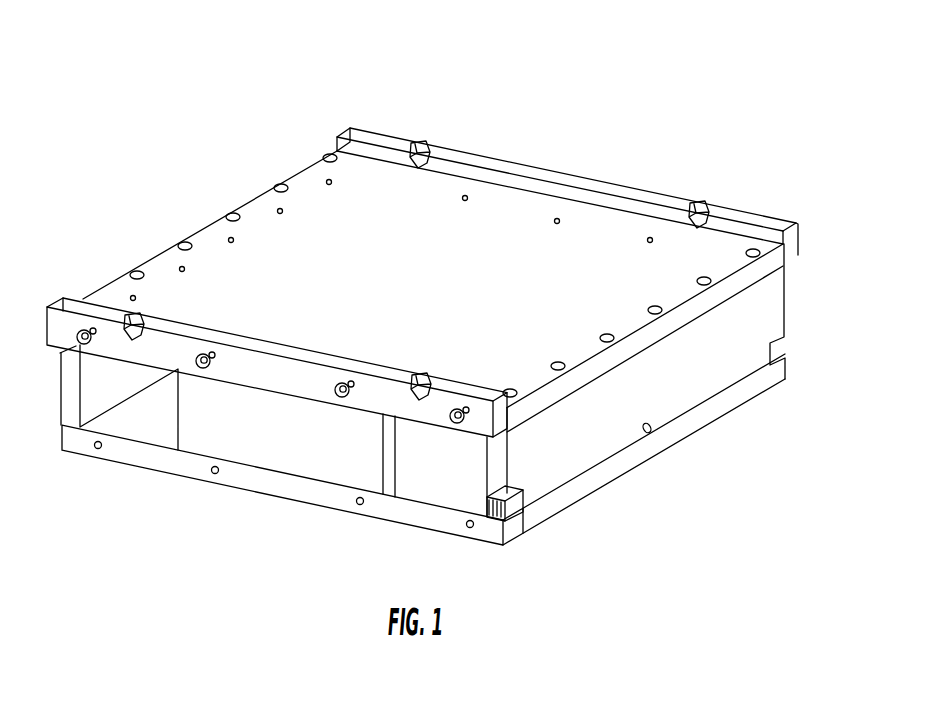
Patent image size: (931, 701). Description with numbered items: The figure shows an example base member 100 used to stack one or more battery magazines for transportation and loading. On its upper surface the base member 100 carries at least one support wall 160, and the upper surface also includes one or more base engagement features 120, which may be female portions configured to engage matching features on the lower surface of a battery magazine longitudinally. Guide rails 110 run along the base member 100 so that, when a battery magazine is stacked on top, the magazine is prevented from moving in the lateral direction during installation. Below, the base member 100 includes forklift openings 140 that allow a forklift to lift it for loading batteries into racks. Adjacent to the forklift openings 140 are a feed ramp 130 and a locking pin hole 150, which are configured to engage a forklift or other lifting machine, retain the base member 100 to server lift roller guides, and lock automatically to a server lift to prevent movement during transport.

The base member 100 is at (747, 84).
The guide rails 110 is at (475, 172).
The base engagement features 120 is at (692, 205).
The feed ramp 130 is at (514, 513).
The forklift openings 140 is at (144, 420).
The locking pin hole 150 is at (655, 430).
The support wall 160 is at (326, 205).